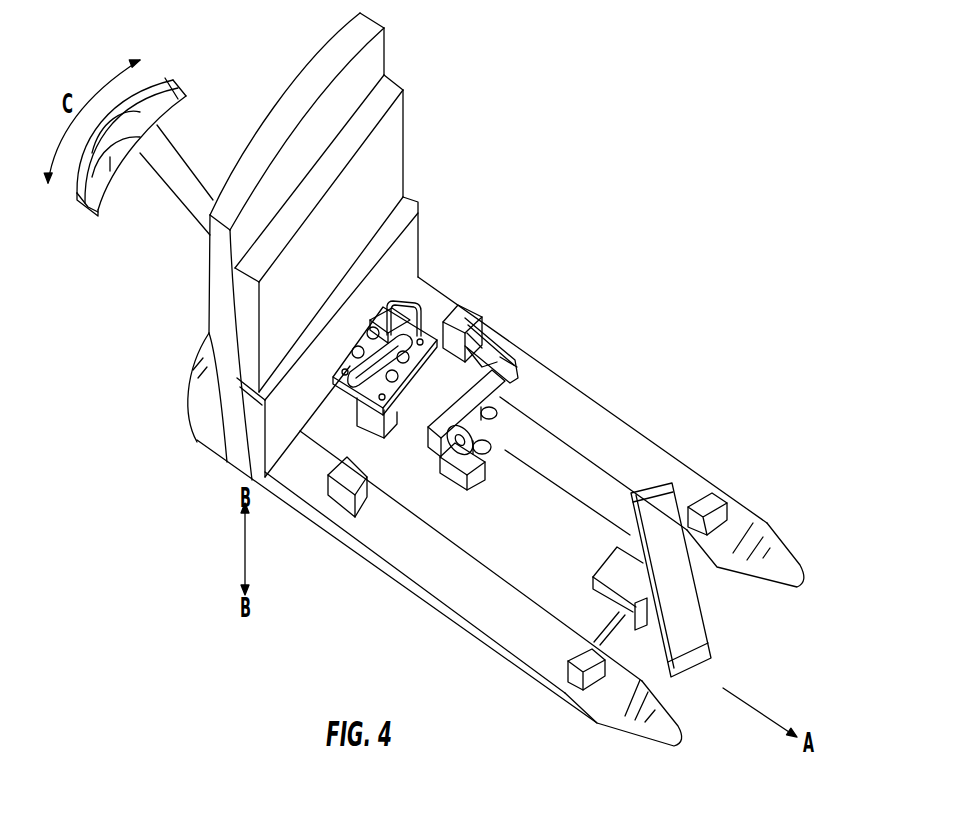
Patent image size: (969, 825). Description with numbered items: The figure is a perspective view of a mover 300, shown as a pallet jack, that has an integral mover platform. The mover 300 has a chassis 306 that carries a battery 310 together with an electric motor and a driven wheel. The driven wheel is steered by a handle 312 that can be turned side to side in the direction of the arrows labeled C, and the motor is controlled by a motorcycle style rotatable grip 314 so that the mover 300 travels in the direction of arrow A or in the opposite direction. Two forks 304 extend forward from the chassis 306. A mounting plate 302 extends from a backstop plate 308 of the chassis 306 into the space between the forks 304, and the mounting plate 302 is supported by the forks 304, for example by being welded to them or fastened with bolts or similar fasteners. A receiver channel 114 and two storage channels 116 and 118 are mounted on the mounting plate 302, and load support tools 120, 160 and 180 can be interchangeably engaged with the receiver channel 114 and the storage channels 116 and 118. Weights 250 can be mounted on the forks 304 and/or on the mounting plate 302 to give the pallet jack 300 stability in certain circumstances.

The mover 300 is at (507, 111).
The mounting plate 302 is at (593, 497).
The forks 304 is at (610, 424).
The chassis 306 is at (225, 400).
The backstop plate 308 is at (410, 219).
The battery 310 is at (352, 249).
The handle 312 is at (182, 182).
The rotatable grip 314 is at (178, 88).
The receiver channel 114 is at (613, 562).
The storage channel 116 is at (452, 474).
The storage channel 118 is at (395, 412).
The load support tool 120 is at (725, 620).
The load support tool 160 is at (507, 346).
The load support tool 180 is at (422, 300).
The weights 250 is at (467, 322).